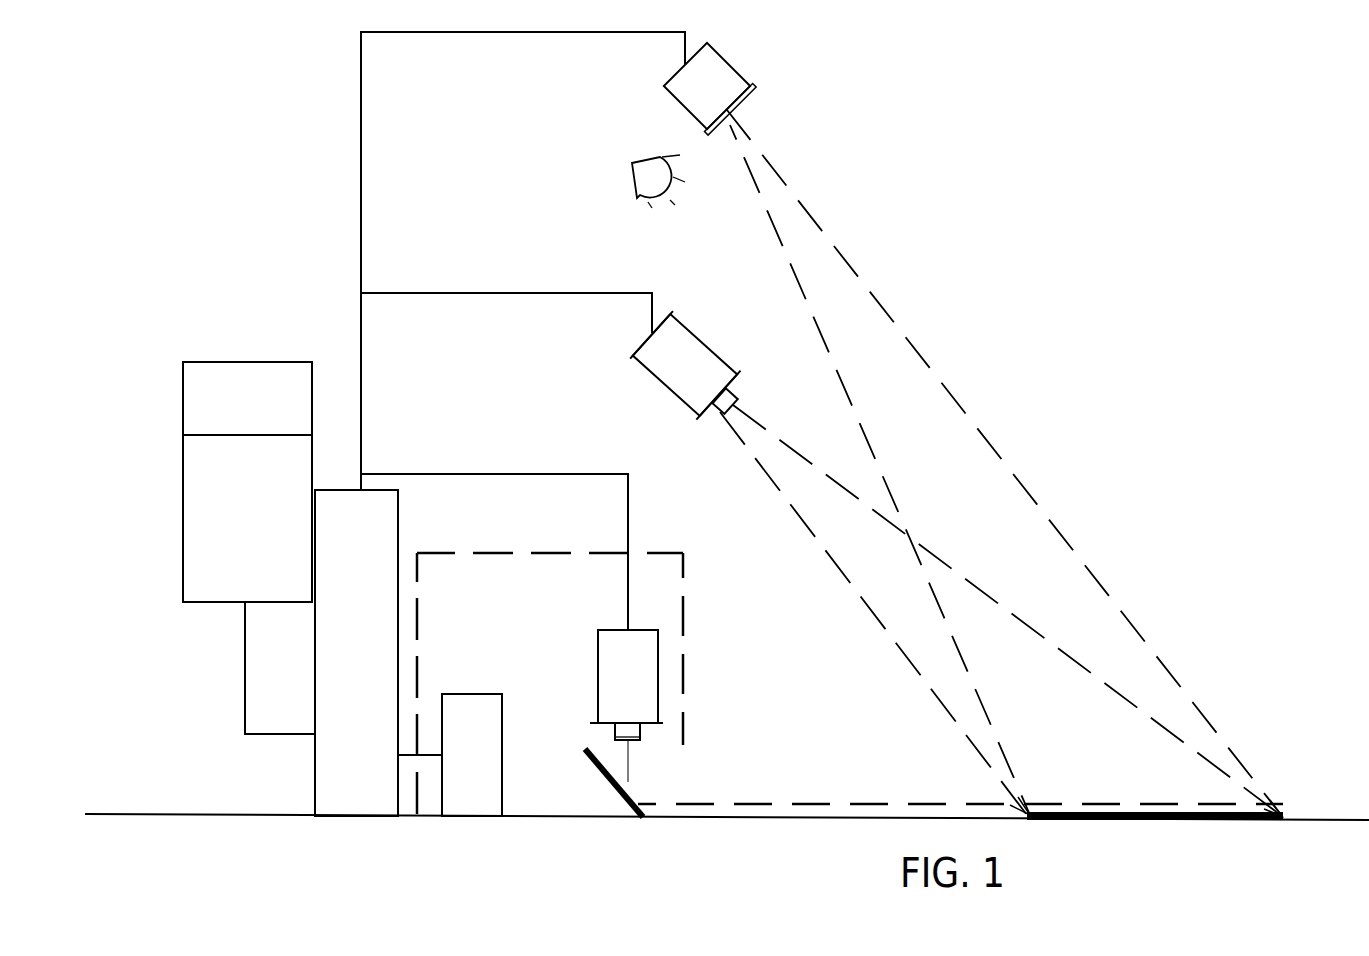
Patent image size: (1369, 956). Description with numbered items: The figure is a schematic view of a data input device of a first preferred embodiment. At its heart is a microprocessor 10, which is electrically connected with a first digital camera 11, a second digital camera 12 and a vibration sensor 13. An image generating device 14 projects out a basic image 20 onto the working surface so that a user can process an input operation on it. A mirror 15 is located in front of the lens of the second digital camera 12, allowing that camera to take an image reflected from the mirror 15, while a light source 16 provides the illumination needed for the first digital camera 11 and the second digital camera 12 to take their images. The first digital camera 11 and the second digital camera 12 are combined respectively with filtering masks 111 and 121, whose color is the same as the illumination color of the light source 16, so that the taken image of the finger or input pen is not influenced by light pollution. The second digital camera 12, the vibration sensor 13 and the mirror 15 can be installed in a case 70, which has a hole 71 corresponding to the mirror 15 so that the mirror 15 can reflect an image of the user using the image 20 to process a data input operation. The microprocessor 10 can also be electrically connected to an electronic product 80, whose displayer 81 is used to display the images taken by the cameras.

The microprocessor 10 is at (333, 705).
The first digital camera 11 is at (640, 348).
The filtering mask 111 is at (713, 412).
The second digital camera 12 is at (610, 653).
The filtering mask 121 is at (638, 738).
The vibration sensor 13 is at (463, 790).
The image generating device 14 is at (717, 85).
The mirror 15 is at (623, 803).
The light source 16 is at (652, 180).
The basic image 20 is at (1246, 818).
The case 70 is at (683, 653).
The hole 71 is at (680, 782).
The electronic product 80 is at (213, 533).
The displayer 81 is at (227, 405).